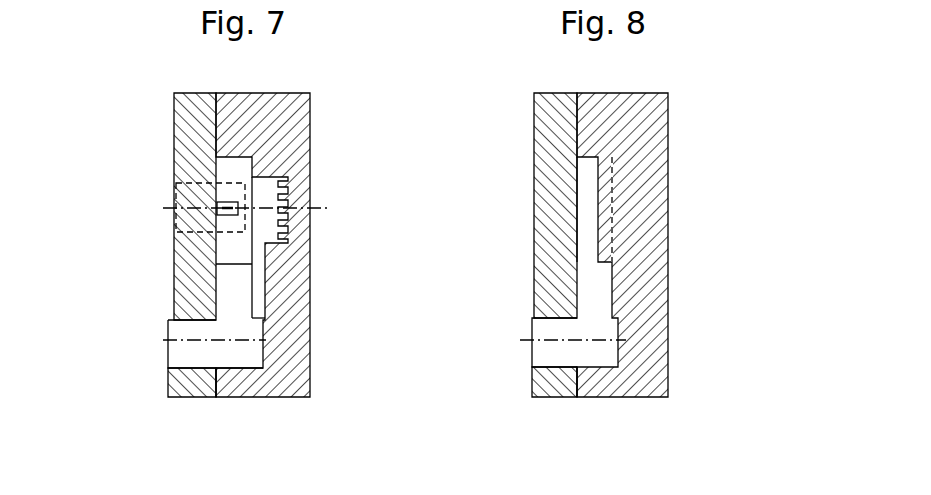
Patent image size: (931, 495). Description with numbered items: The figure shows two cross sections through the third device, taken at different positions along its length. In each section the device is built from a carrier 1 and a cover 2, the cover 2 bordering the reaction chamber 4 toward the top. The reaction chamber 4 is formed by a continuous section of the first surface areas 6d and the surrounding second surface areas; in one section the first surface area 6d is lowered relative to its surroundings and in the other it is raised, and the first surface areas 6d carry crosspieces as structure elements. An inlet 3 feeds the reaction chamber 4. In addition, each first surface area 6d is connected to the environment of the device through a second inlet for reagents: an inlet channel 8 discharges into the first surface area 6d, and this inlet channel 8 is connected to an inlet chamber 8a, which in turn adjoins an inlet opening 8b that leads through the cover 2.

In FIG. 7, the carrier 1 is at (322, 134).
In FIG. 8, the carrier 1 is at (680, 133).
In FIG. 7, the cover 2 is at (164, 133).
In FIG. 8, the cover 2 is at (525, 133).
In FIG. 7, the inlet 3 is at (222, 208).
In FIG. 7, the reaction chamber 4 is at (228, 247).
In FIG. 8, the reaction chamber 4 is at (584, 234).
In FIG. 7, the first surface area 6d is at (312, 210).
In FIG. 8, the first surface area 6d is at (600, 195).
In FIG. 7, the inlet channel 8 is at (234, 300).
In FIG. 8, the inlet channel 8 is at (598, 295).
In FIG. 7, the inlet chamber 8a is at (247, 397).
In FIG. 8, the inlet chamber 8a is at (597, 355).
In FIG. 7, the inlet opening 8b is at (185, 397).
In FIG. 8, the inlet opening 8b is at (557, 357).